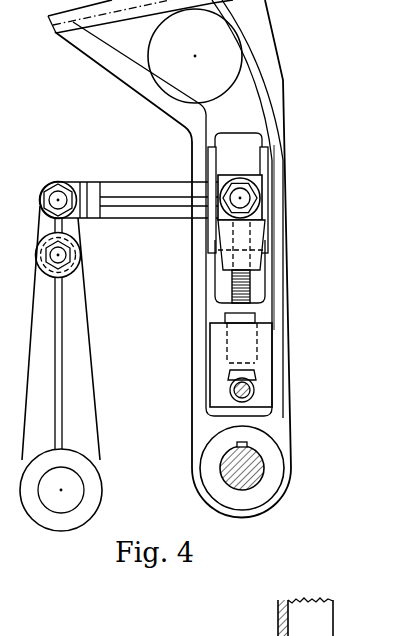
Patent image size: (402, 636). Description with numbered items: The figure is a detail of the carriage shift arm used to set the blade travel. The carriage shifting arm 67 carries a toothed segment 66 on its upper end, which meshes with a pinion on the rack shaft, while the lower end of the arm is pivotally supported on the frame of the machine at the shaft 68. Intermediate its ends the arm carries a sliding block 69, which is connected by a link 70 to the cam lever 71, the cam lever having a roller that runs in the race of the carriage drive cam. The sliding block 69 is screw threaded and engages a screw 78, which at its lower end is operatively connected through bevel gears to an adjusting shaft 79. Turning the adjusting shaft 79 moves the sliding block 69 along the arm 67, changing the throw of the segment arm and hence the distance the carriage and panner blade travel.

The toothed segment 66 is at (53, 28).
The carriage shifting arm 67 is at (280, 103).
The pivot shaft 68 is at (268, 472).
The sliding block 69 is at (261, 186).
The link 70 is at (147, 187).
The cam lever 71 is at (90, 391).
The screw 78 is at (248, 289).
The adjusting shaft 79 is at (254, 388).